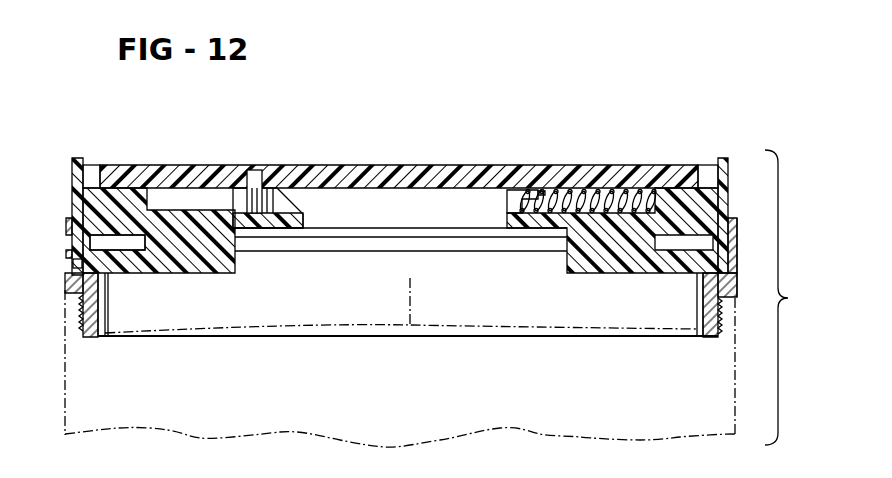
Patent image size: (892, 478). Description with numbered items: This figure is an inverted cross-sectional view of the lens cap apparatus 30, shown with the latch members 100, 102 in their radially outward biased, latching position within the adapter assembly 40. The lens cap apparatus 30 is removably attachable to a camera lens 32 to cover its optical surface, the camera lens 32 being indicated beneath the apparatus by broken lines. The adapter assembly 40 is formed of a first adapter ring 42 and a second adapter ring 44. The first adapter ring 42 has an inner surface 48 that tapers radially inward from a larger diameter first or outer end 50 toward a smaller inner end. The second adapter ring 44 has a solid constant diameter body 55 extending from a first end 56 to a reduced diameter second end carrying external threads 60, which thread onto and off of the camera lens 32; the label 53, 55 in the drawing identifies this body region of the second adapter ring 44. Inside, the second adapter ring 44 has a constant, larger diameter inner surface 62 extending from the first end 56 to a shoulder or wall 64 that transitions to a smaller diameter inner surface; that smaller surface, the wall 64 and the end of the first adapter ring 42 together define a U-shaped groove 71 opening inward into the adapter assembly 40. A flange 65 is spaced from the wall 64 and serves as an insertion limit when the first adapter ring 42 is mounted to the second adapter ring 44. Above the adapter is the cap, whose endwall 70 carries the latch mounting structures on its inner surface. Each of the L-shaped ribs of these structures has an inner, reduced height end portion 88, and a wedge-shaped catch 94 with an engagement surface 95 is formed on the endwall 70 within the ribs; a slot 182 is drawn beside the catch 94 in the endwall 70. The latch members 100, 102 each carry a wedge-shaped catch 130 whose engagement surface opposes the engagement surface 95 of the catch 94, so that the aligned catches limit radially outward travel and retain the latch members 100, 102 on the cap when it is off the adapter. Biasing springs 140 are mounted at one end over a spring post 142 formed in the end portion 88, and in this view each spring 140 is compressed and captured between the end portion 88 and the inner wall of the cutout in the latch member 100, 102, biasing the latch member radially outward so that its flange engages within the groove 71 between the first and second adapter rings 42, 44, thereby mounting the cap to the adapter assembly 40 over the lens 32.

The lens cap apparatus 30 is at (791, 297).
The camera lens 32 is at (78, 416).
The adapter assembly 40 is at (748, 282).
The first adapter ring 42 is at (69, 233).
The second adapter ring 44 is at (60, 282).
The inner surface 48 is at (82, 235).
The first or outer end 50 is at (78, 157).
The chamber 53 is at (717, 172).
The solid constant diameter body 55 is at (612, 208).
The first end 56 is at (734, 220).
The external threads 60 is at (88, 313).
The larger diameter inner surface 62 is at (721, 233).
The shoulder or wall 64 is at (733, 300).
The flange 65 is at (274, 250).
The endwall 70 is at (421, 176).
The U-shaped groove 71 is at (74, 263).
The reduced height end portion 88 is at (508, 195).
The wedge-shaped catch 94 is at (236, 196).
The engagement surface 95 is at (250, 192).
The latch member 100 is at (200, 266).
The latch member 102 is at (606, 267).
The wedge-shaped catch 130 is at (283, 210).
The biasing spring 140 is at (576, 196).
The spring post 142 is at (536, 203).
The slot 182 is at (263, 200).